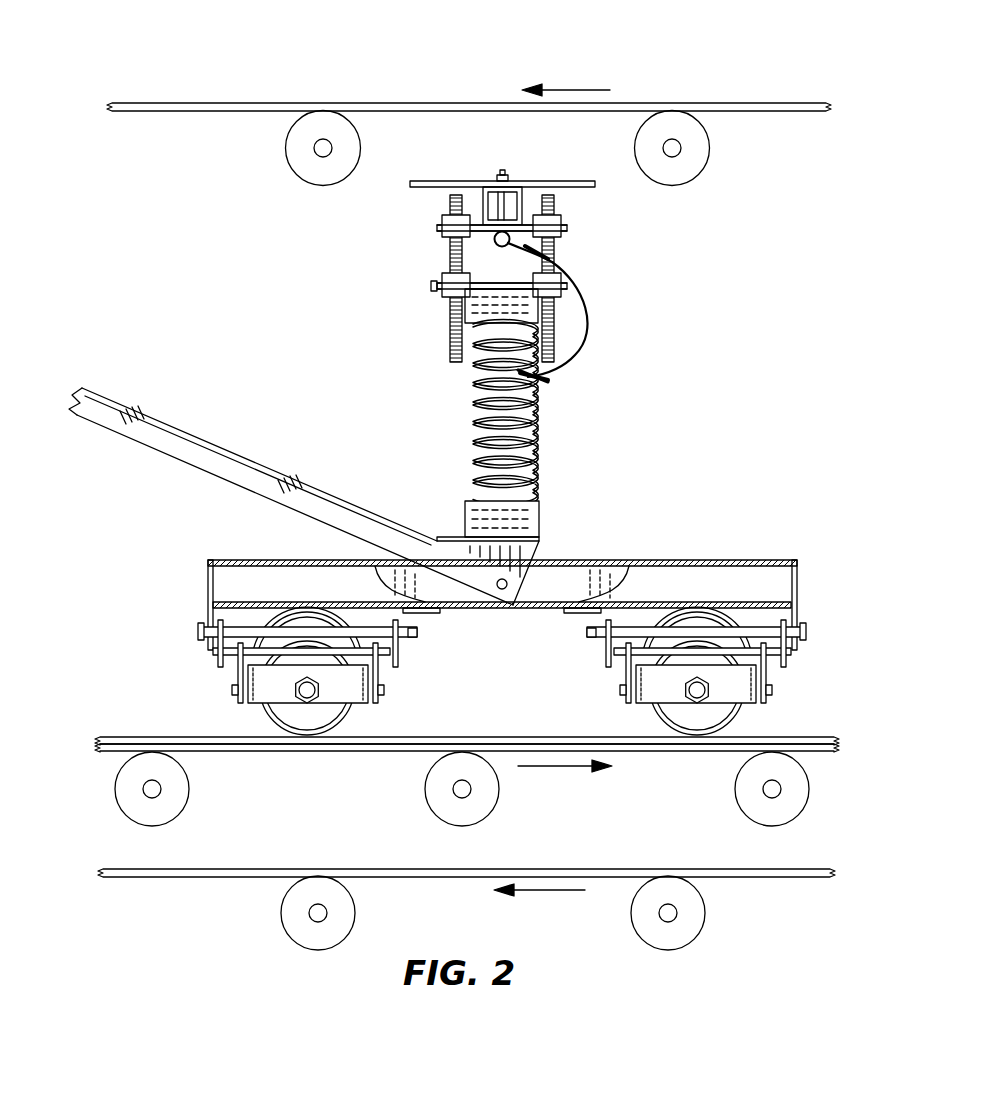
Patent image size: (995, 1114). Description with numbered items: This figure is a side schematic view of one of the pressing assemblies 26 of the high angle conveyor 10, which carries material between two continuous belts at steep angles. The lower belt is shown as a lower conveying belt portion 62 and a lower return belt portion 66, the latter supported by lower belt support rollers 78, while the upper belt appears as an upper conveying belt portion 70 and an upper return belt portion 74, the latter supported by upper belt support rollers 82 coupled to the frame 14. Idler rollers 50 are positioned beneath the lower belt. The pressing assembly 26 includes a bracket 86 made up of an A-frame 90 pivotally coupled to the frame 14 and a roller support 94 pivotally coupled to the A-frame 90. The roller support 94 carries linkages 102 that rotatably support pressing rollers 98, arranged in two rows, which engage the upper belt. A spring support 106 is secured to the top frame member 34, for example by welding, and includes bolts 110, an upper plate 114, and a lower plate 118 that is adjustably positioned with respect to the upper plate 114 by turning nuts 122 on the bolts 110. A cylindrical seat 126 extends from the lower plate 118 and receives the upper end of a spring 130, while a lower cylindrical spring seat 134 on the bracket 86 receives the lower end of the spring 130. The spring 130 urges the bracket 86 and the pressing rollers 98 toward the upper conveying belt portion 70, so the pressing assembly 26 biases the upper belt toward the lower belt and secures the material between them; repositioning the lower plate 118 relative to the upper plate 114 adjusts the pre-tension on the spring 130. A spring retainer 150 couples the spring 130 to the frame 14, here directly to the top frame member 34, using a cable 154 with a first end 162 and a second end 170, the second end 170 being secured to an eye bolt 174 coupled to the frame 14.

The high angle conveyor 10 is at (130, 60).
The frame 14 is at (476, 183).
The top frame member 34 is at (483, 205).
The pressing assembly 26 is at (750, 276).
The idler rollers 50 is at (177, 800).
The lower conveying belt portion 62 is at (118, 752).
The lower return belt portion 66 is at (128, 880).
The upper conveying belt portion 70 is at (127, 738).
The upper return belt portion 74 is at (236, 103).
The lower belt support rollers 78 is at (345, 924).
The upper belt support rollers 82 is at (301, 155).
The bracket 86 is at (211, 382).
The A-frame 90 is at (230, 472).
The roller support 94 is at (597, 573).
The pressing rollers 98 is at (330, 713).
The linkages 102 is at (378, 677).
The spring support 106 is at (382, 275).
The bolts 110 is at (450, 253).
The upper plate 114 is at (565, 229).
The lower plate 118 is at (436, 286).
The nuts 122 is at (447, 291).
The cylindrical seat 126 is at (450, 318).
The spring 130 is at (533, 452).
The lower cylindrical spring seat 134 is at (538, 522).
The spring retainer 150 is at (643, 372).
The cable 154 is at (591, 343).
The first end 162 is at (542, 383).
The second end 170 is at (509, 233).
The eye bolt 174 is at (447, 243).